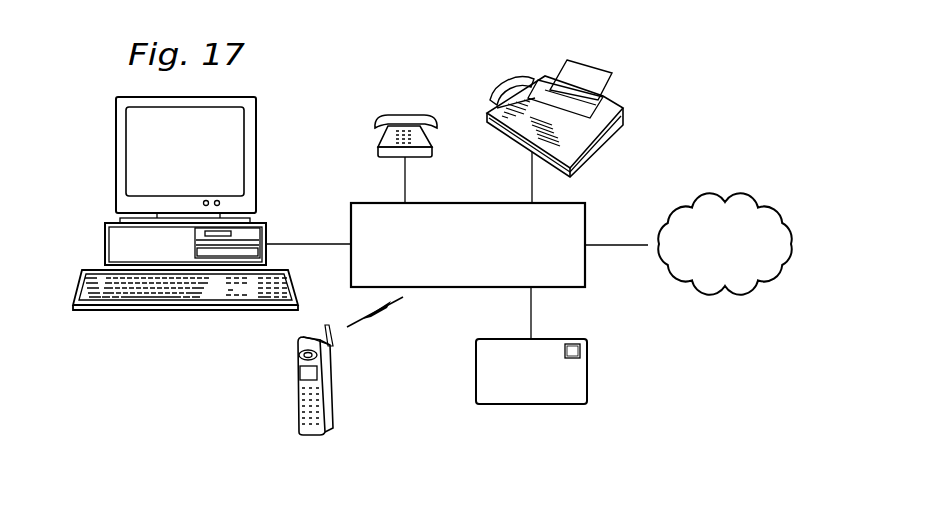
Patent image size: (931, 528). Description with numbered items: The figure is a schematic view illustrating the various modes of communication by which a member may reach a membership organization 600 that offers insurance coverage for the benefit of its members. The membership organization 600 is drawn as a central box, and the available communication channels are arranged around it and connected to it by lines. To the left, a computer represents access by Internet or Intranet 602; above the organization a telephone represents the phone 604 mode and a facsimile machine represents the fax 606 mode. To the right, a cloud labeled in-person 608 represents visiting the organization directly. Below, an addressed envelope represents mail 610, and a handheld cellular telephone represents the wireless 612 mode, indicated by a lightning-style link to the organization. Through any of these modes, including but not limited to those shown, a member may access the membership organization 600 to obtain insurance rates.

The membership organization 600 is at (457, 287).
The Internet or Intranet 602 is at (116, 155).
The phone 604 is at (395, 113).
The fax 606 is at (593, 64).
The in-person 608 is at (753, 193).
The mail 610 is at (587, 370).
The wireless 612 is at (298, 368).